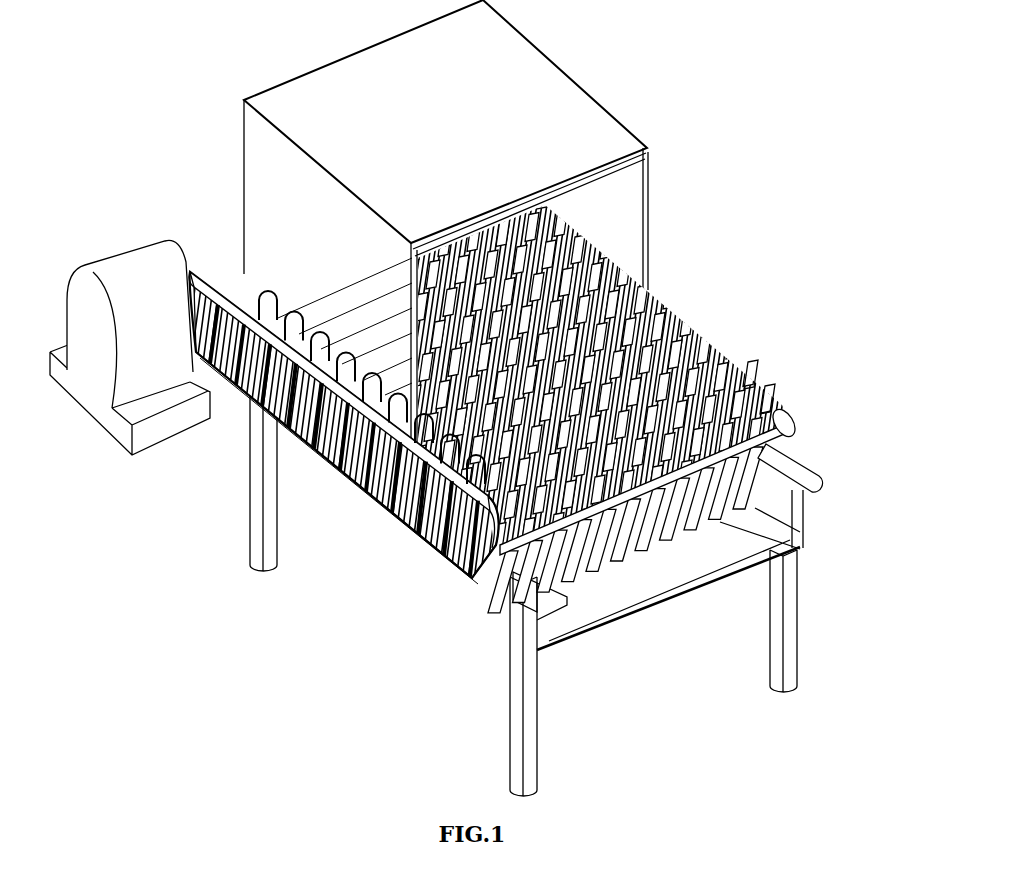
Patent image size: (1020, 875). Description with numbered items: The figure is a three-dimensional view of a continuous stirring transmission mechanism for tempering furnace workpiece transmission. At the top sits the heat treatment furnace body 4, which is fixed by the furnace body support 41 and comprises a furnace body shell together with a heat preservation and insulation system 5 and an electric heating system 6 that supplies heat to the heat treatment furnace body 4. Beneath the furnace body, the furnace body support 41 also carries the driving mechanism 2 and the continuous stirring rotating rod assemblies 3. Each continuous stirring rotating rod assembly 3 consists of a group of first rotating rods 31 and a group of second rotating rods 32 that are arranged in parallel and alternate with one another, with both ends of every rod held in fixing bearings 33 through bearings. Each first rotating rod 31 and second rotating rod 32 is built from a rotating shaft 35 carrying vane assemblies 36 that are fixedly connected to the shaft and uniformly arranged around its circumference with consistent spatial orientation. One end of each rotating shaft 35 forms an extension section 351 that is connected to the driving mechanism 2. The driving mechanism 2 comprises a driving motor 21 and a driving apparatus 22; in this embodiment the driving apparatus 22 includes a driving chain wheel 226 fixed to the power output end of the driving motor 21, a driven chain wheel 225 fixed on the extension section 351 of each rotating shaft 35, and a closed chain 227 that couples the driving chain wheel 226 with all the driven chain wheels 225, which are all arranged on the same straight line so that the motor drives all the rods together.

The driving mechanism 2 is at (147, 313).
The driving motor 21 is at (173, 375).
The driving apparatus 22 is at (318, 460).
The driven chain wheel 225 is at (470, 580).
The driving chain wheel 226 is at (212, 312).
The closed chain 227 is at (417, 540).
The continuous stirring rotating rod assembly 3 is at (713, 337).
The first rotating rod 31 is at (753, 370).
The second rotating rod 32 is at (770, 393).
The fixing bearing 33 is at (797, 427).
The rotating shaft 35 is at (777, 557).
The extension section 351 is at (503, 570).
The vane assembly 36 is at (650, 593).
The heat treatment furnace body 4 is at (550, 80).
The furnace body support 41 is at (520, 637).
The heat preservation and insulation system 5 is at (647, 150).
The heating system 6 is at (648, 230).